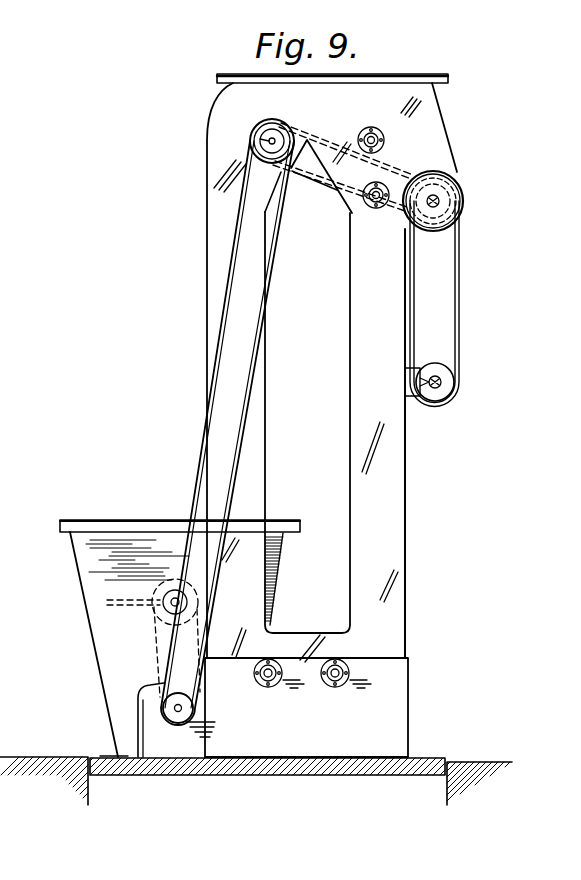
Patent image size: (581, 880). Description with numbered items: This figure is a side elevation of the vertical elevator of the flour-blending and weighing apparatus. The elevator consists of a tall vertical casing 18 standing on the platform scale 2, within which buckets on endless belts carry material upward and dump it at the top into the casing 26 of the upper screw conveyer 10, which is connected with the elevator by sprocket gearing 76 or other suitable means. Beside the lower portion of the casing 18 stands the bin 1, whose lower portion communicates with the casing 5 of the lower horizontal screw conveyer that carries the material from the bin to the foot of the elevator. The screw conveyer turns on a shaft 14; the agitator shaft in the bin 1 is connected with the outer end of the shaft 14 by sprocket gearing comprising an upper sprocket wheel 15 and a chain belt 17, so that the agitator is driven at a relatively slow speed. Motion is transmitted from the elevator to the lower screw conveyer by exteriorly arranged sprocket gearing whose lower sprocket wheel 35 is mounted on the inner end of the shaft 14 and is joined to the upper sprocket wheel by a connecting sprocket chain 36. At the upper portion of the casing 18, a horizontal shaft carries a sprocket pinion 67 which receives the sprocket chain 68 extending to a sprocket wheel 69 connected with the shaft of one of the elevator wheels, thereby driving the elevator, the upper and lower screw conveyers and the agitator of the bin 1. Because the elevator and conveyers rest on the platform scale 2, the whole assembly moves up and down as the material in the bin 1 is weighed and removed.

The bin 1 is at (82, 568).
The platform scale 2 is at (323, 776).
The casing of the lower horizontal screw conveyer 5 is at (147, 689).
The upper screw conveyer 10 is at (452, 218).
The shaft of the screw conveyer 14 is at (187, 708).
The upper sprocket wheel 15 is at (153, 611).
The chain belt 17 is at (153, 659).
The vertical casing 18 is at (398, 492).
The casing of the upper screw conveyer 26 is at (445, 173).
The lower sprocket wheel 35 is at (252, 135).
The sprocket chain 36 is at (230, 254).
The sprocket pinion 67 is at (450, 376).
The sprocket chain 68 is at (458, 305).
The sprocket wheel 69 is at (461, 225).
The sprocket gearing 76 is at (313, 182).